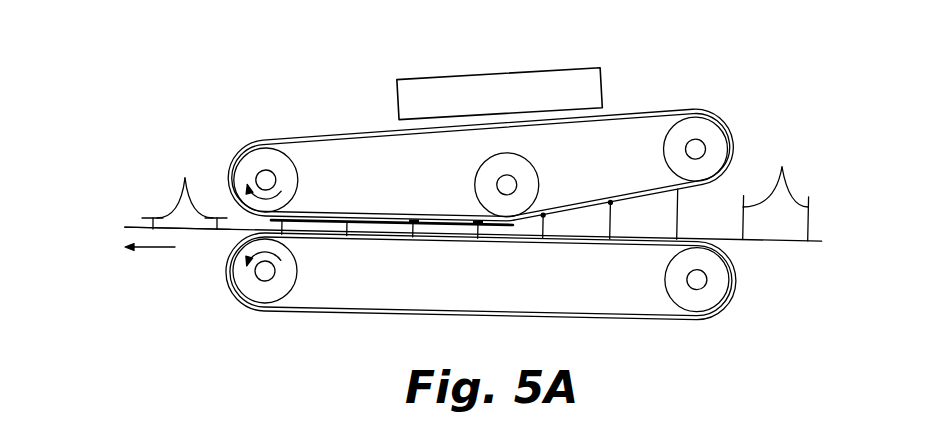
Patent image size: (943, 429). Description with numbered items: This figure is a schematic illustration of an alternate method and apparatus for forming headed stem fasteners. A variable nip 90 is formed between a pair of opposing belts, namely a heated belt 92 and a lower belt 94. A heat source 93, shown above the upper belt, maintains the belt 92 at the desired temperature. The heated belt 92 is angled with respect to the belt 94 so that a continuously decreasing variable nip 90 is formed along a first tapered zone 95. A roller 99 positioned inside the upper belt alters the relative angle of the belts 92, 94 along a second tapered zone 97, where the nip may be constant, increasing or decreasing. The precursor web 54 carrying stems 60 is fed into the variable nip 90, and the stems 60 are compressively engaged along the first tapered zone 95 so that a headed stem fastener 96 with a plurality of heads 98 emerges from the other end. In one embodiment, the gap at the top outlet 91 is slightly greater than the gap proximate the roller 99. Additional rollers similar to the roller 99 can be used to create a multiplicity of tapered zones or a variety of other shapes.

The precursor web 54 is at (782, 246).
The stems 60 is at (776, 191).
The variable nip 90 is at (737, 180).
The top outlet 91 is at (226, 244).
The heated belt 92 is at (327, 137).
The heat source 93 is at (496, 76).
The belt 94 is at (323, 313).
The first tapered zone 95 is at (583, 200).
The headed stem fastener 96 is at (131, 155).
The second tapered zone 97 is at (394, 212).
The heads 98 is at (184, 189).
The roller 99 is at (477, 181).